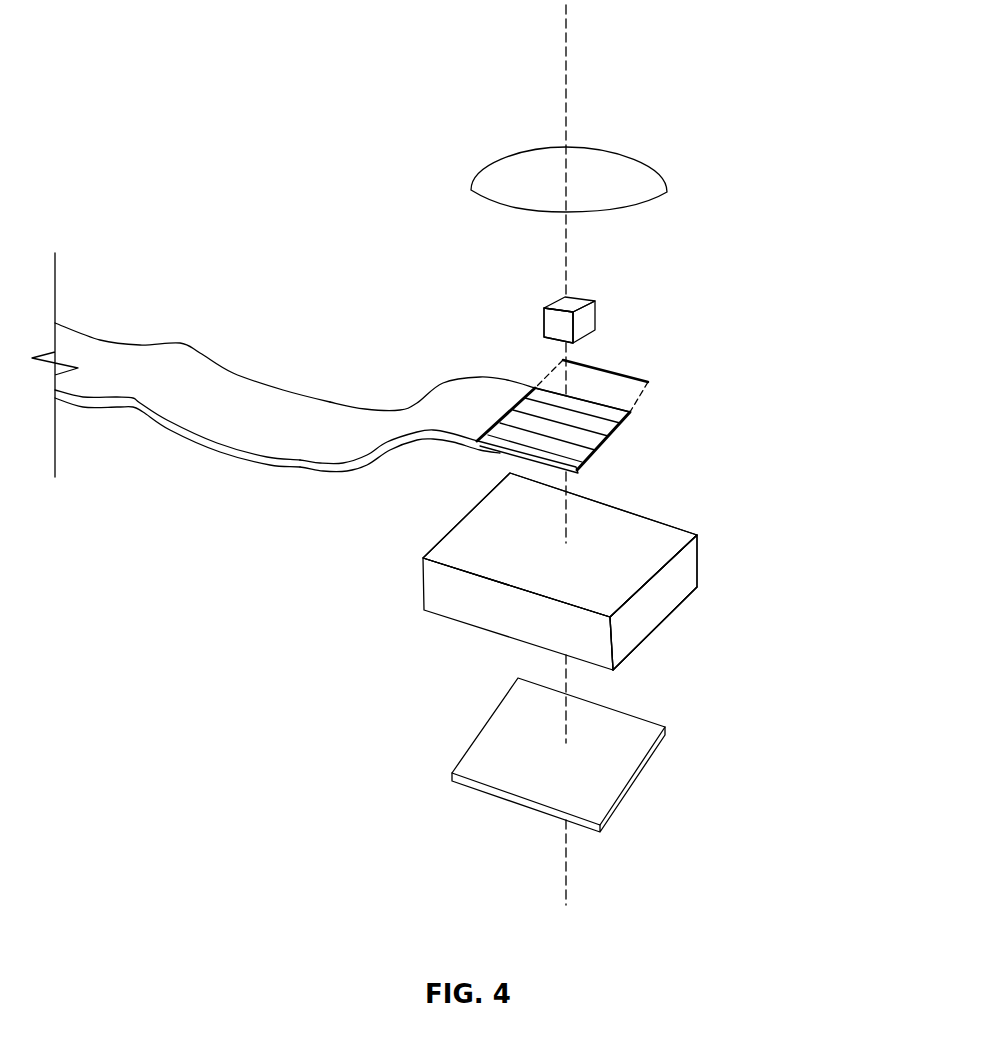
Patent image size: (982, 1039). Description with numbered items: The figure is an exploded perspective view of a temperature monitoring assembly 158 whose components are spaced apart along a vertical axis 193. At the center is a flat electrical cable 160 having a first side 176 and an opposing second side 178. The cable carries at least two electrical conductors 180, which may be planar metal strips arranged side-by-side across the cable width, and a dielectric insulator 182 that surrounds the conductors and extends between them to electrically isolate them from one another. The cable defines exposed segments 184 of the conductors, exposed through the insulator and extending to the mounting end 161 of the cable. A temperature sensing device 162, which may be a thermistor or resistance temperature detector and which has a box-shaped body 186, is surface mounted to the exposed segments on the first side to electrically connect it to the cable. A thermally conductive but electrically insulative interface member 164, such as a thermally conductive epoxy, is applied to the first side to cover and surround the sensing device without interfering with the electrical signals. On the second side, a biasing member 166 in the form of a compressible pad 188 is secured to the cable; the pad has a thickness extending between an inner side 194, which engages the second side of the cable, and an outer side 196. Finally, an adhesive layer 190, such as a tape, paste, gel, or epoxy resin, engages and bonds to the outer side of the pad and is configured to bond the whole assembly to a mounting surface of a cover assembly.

The temperature monitoring assembly 158 is at (316, 213).
The electrical cable 160 is at (115, 355).
The mounting end 161 is at (645, 418).
The temperature sensing device 162 is at (580, 298).
The thermally conductive interface member 164 is at (628, 167).
The biasing member 166 is at (677, 522).
The first side 176 is at (463, 390).
The second side 178 is at (497, 453).
The electrical conductors 180 is at (593, 432).
The dielectric insulator 182 is at (613, 432).
The exposed segments 184 is at (608, 362).
The box-shaped body 186 is at (545, 322).
The compressible pad 188 is at (678, 587).
The adhesive layer 190 is at (610, 770).
The vertical axis 193 is at (562, 25).
The inner side 194 is at (470, 557).
The outer side 196 is at (642, 640).